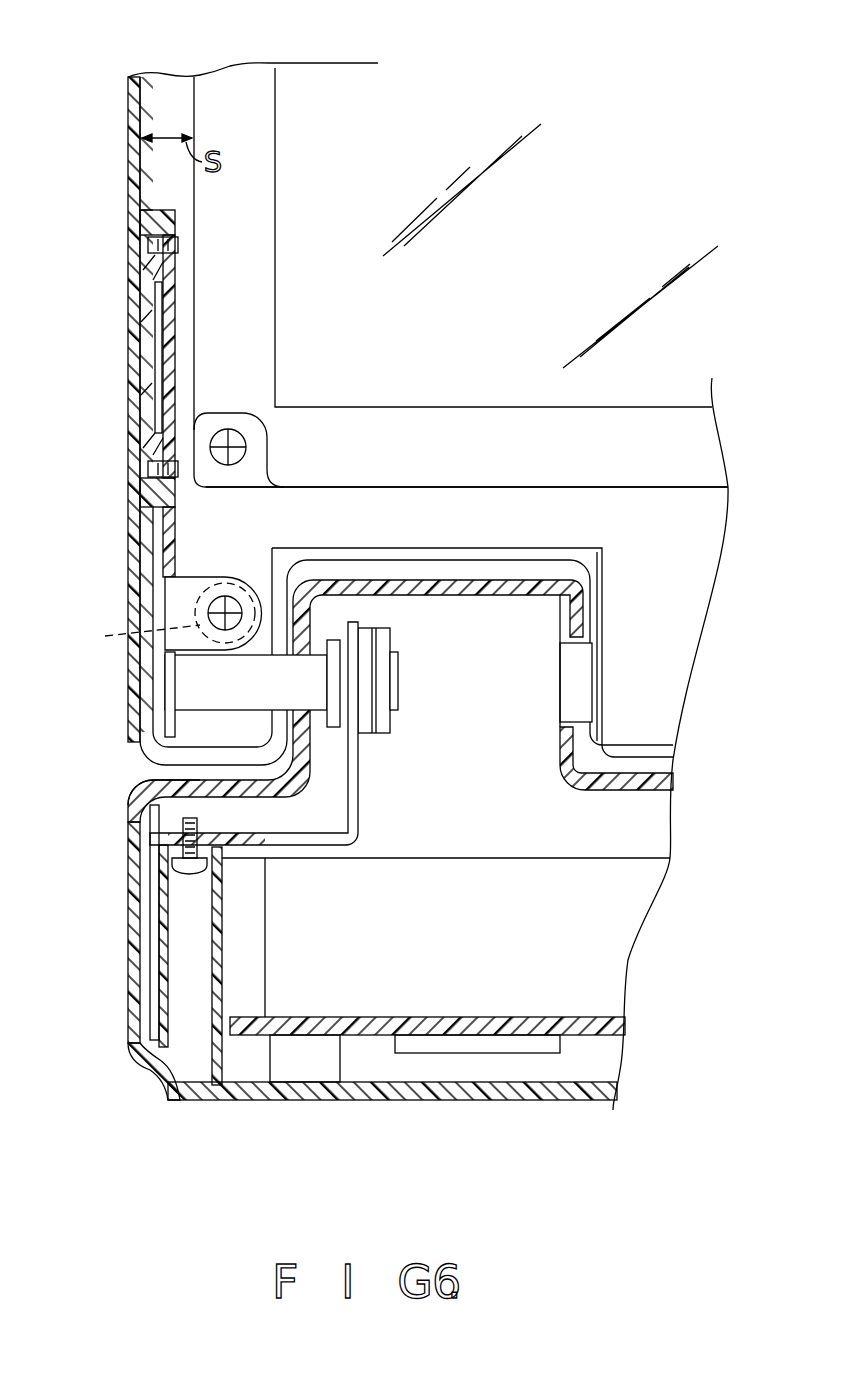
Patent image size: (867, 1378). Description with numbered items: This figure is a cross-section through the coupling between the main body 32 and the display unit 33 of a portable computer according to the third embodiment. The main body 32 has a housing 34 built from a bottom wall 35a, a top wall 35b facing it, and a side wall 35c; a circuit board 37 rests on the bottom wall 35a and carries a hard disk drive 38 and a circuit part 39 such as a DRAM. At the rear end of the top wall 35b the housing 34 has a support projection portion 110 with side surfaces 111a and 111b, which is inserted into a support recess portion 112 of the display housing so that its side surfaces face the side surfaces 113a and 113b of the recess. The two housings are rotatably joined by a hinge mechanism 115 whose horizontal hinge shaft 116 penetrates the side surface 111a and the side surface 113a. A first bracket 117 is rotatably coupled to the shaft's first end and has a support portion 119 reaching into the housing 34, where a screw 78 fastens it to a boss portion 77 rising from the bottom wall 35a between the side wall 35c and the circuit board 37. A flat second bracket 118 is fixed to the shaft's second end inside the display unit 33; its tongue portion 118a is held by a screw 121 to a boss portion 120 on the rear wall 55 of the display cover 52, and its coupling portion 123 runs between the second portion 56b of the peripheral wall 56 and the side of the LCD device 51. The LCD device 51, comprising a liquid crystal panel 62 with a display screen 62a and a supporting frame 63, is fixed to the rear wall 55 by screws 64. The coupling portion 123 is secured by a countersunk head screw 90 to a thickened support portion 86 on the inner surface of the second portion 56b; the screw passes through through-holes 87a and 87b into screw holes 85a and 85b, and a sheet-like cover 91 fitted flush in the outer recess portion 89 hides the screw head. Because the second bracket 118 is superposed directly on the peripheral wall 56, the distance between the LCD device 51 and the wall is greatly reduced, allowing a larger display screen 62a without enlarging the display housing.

The main body 32 is at (152, 1082).
The display unit 33 is at (238, 70).
The housing 34 is at (128, 805).
The bottom wall 35a is at (370, 1100).
The top wall 35b is at (665, 790).
The side wall 35c is at (130, 1035).
The circuit board 37 is at (610, 1016).
The hard disk drive 38 is at (650, 900).
The circuit part 39 is at (497, 1053).
The liquid crystal display device 51 is at (672, 380).
The display cover 52 is at (128, 97).
The rear wall 55 is at (190, 304).
The peripheral wall 56 is at (142, 660).
The second portion of peripheral wall 56b is at (128, 143).
The liquid crystal panel 62 is at (348, 63).
The display screen 62a is at (550, 246).
The frame 63 is at (718, 455).
The screw 64 is at (246, 447).
The boss portion 77 is at (158, 950).
The screw 78 is at (158, 882).
The screw hole 85a is at (177, 229).
The screw hole 85b is at (150, 530).
The support portion 86 is at (145, 355).
The through-hole 87a is at (152, 262).
The through-hole 87b is at (148, 455).
The recess portion 89 is at (143, 385).
The countersunk head screw 90 is at (150, 243).
The cover 91 is at (132, 312).
The support projection portion 110 is at (465, 590).
The side surface 111a is at (308, 750).
The side surface 111b is at (578, 608).
The support recess portion 112 is at (555, 548).
The side surface 113a is at (300, 600).
The side surface 113b is at (590, 582).
The hinge mechanism 115 is at (165, 680).
The hinge shaft 116 is at (175, 705).
The first bracket 117 is at (358, 820).
The second bracket 118 is at (165, 600).
The tongue portion 118a is at (190, 590).
The support portion 119 is at (300, 858).
The boss portion 120 is at (128, 633).
The screw 121 is at (228, 605).
The coupling portion 123 is at (178, 345).